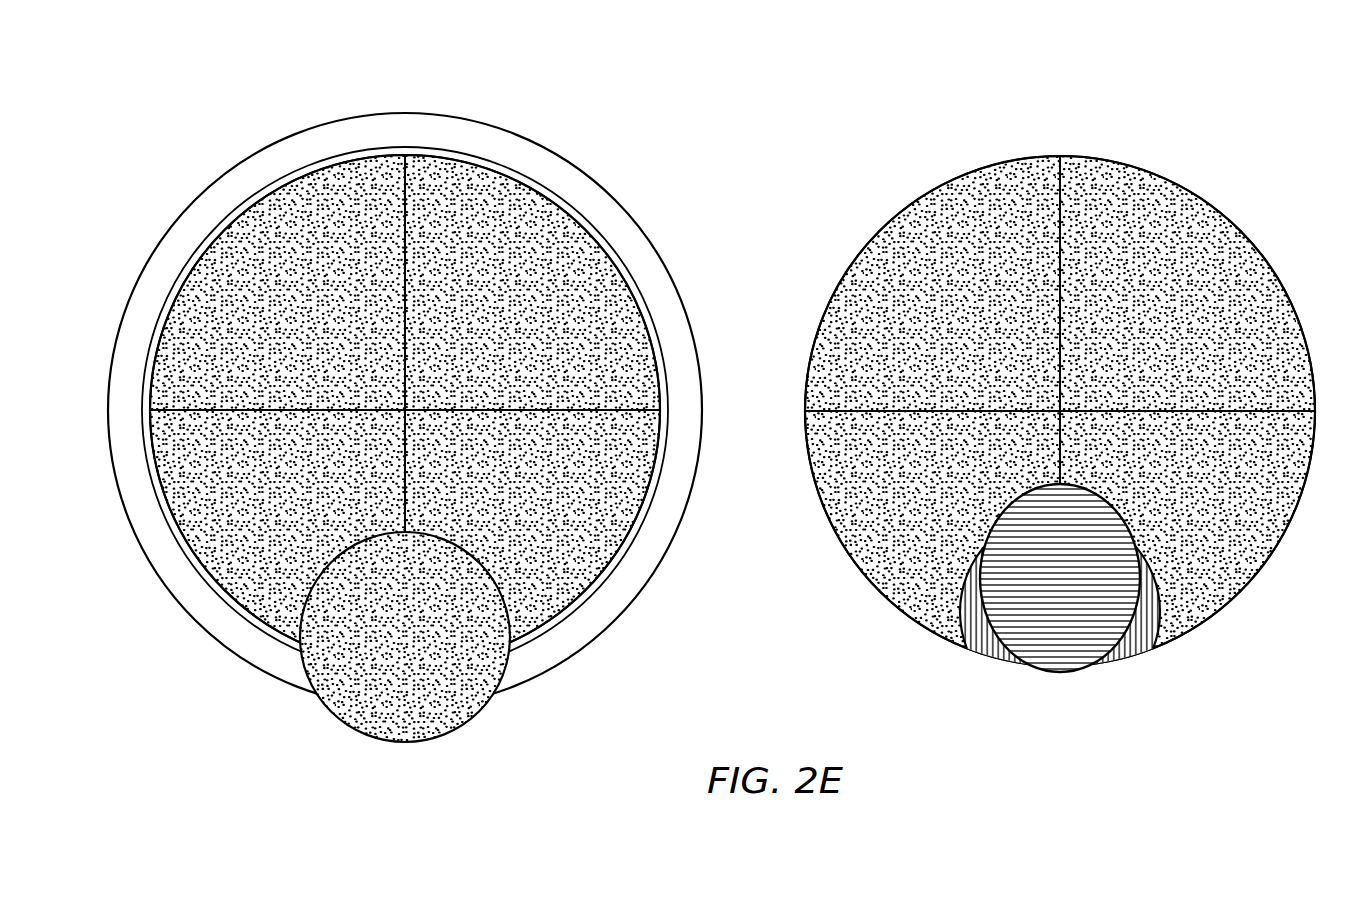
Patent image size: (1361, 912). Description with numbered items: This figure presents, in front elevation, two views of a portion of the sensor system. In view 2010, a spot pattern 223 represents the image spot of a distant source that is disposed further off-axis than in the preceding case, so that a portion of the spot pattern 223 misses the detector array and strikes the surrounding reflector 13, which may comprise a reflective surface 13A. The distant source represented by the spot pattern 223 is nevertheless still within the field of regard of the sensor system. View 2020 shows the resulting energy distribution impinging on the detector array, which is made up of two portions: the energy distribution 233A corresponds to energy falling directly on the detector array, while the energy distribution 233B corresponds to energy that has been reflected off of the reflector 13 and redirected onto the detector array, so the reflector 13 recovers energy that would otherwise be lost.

The view 2010 is at (378, 396).
The view 2020 is at (1032, 394).
The reflector 13 is at (148, 267).
The reflective surface 13A is at (196, 590).
The spot pattern 223 is at (347, 722).
The energy distribution 233A is at (975, 642).
The energy distribution 233B is at (1098, 638).